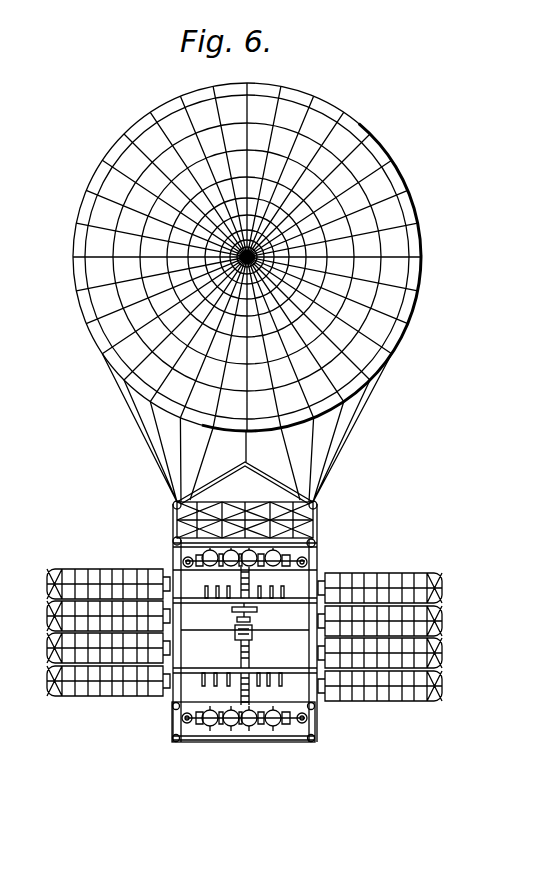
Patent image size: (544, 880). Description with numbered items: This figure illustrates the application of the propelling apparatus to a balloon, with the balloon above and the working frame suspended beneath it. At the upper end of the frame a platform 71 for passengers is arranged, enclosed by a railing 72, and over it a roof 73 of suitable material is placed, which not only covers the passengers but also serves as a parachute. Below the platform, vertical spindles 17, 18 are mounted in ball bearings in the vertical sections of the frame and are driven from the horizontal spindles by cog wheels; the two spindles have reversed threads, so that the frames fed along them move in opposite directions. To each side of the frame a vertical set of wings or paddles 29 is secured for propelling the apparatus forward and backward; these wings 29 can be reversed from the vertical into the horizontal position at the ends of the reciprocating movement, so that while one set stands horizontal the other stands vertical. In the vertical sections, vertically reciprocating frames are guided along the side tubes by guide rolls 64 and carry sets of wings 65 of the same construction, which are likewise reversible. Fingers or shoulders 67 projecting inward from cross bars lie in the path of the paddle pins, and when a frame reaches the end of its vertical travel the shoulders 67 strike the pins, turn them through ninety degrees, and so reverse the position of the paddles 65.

The vertical spindle 17 is at (250, 584).
The vertical spindle 18 is at (255, 673).
The wings or paddles 29 is at (82, 577).
The guide rolls 64 is at (183, 560).
The wings or paddles 65 is at (313, 548).
The fingers or shoulders 67 is at (204, 687).
The platform 71 is at (300, 512).
The railing 72 is at (178, 513).
The roof 73 is at (270, 477).